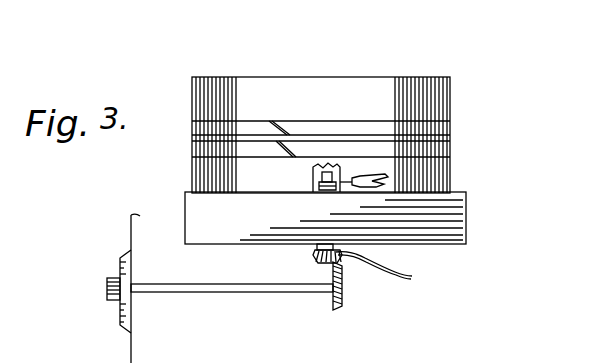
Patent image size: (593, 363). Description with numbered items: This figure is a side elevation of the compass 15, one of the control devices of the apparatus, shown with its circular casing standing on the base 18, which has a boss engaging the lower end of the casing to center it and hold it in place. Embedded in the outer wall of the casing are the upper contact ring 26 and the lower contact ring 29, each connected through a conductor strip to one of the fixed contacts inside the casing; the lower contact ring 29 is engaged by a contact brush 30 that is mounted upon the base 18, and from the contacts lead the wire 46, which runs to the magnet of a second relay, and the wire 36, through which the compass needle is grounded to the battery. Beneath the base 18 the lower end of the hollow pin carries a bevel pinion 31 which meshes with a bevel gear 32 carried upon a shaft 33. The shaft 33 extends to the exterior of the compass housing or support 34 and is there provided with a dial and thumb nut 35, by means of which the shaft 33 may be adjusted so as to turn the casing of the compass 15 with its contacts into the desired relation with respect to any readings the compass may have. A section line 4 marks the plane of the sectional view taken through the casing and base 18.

The section line 4- 4 is at (324, 88).
The compass 15 is at (451, 88).
The upper contact ring 26 is at (451, 128).
The lower contact ring 29 is at (451, 150).
The base 18 is at (467, 218).
The contact brush 30 is at (312, 175).
The wire 46 is at (375, 188).
The bevel pinion 31 is at (313, 260).
The bevel gear 32 is at (342, 308).
The shaft 33 is at (215, 292).
The compass housing or support 34 is at (130, 237).
The dial and thumb nut 35 is at (119, 263).
The wire 36 is at (402, 281).